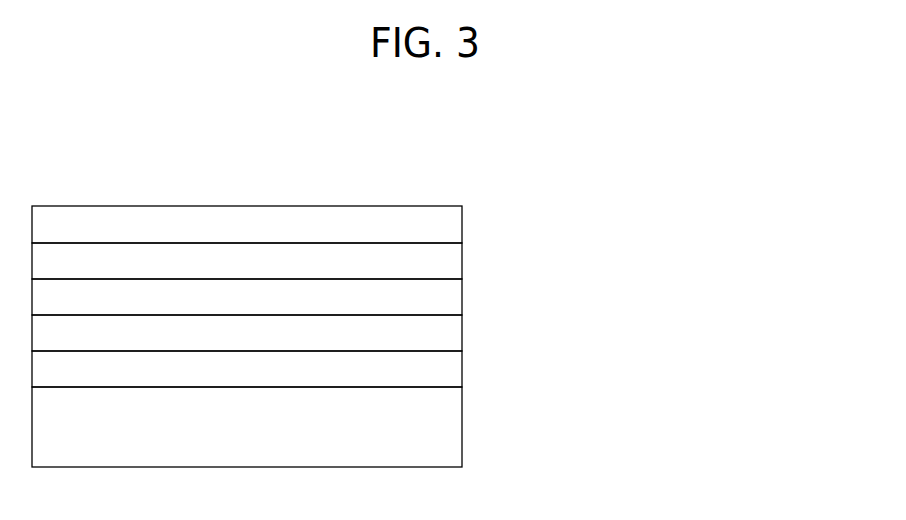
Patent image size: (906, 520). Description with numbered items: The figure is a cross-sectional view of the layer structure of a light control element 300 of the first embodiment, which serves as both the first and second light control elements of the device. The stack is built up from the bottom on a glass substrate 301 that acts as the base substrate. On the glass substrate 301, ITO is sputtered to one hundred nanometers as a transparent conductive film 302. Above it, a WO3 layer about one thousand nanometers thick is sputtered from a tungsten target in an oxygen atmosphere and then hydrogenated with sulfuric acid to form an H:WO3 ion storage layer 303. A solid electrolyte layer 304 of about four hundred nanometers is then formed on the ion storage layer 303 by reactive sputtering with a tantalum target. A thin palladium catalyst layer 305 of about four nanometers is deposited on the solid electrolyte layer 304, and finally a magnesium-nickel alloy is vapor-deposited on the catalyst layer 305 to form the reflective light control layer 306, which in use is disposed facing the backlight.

The light control element 300 is at (425, 326).
The glass substrate 301 is at (332, 441).
The transparent conductive film 302 is at (462, 370).
The ion storage layer 303 is at (462, 333).
The solid electrolyte layer 304 is at (462, 297).
The catalyst layer 305 is at (462, 262).
The reflective light control layer 306 is at (462, 225).